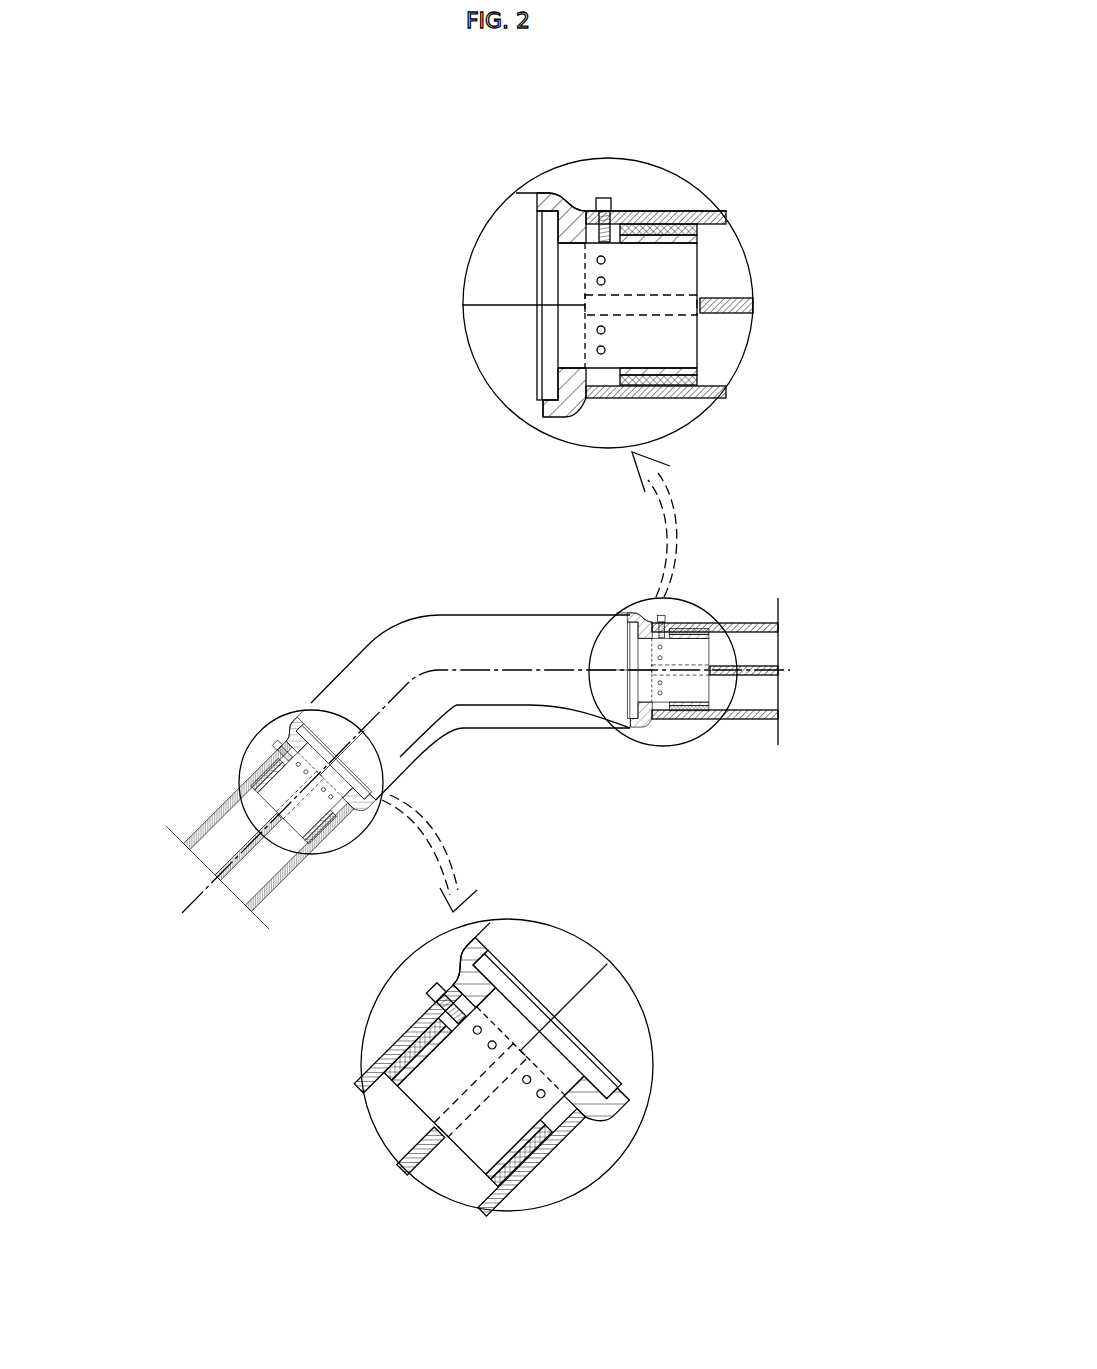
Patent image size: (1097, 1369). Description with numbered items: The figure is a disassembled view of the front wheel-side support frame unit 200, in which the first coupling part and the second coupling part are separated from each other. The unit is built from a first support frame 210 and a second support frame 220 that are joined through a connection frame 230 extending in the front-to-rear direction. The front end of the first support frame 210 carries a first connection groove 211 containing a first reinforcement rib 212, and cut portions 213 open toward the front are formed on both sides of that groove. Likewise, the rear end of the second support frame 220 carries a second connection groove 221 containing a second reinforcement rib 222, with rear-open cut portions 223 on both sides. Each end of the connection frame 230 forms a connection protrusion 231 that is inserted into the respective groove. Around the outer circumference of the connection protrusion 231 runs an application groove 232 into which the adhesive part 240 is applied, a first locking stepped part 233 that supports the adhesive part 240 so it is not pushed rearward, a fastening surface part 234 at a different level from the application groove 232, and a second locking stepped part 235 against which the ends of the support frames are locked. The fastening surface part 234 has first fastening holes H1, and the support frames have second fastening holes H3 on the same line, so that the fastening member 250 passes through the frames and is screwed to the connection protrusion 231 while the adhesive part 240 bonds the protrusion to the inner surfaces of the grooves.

The front wheel-side support frame unit 200 is at (597, 372).
The first support frame 210 is at (228, 808).
The first connection groove 211 is at (583, 1150).
The first reinforcement rib 212 is at (393, 1150).
The cut portion 213 is at (532, 1155).
The second support frame 220 is at (668, 211).
The second connection groove 221 is at (715, 397).
The second reinforcement rib 222 is at (735, 312).
The cut portion 223 is at (645, 310).
The connection frame 230 is at (556, 251).
The connection protrusion 231 is at (700, 377).
The application groove 232 is at (700, 232).
The first locking stepped part 233 is at (592, 398).
The fastening surface part 234 is at (622, 222).
The second locking stepped part 235 is at (560, 405).
The adhesive part 240 is at (692, 212).
The fastening member 250 is at (596, 205).
The first fastening hole H1 is at (598, 258).
The second fastening hole H3 is at (604, 210).